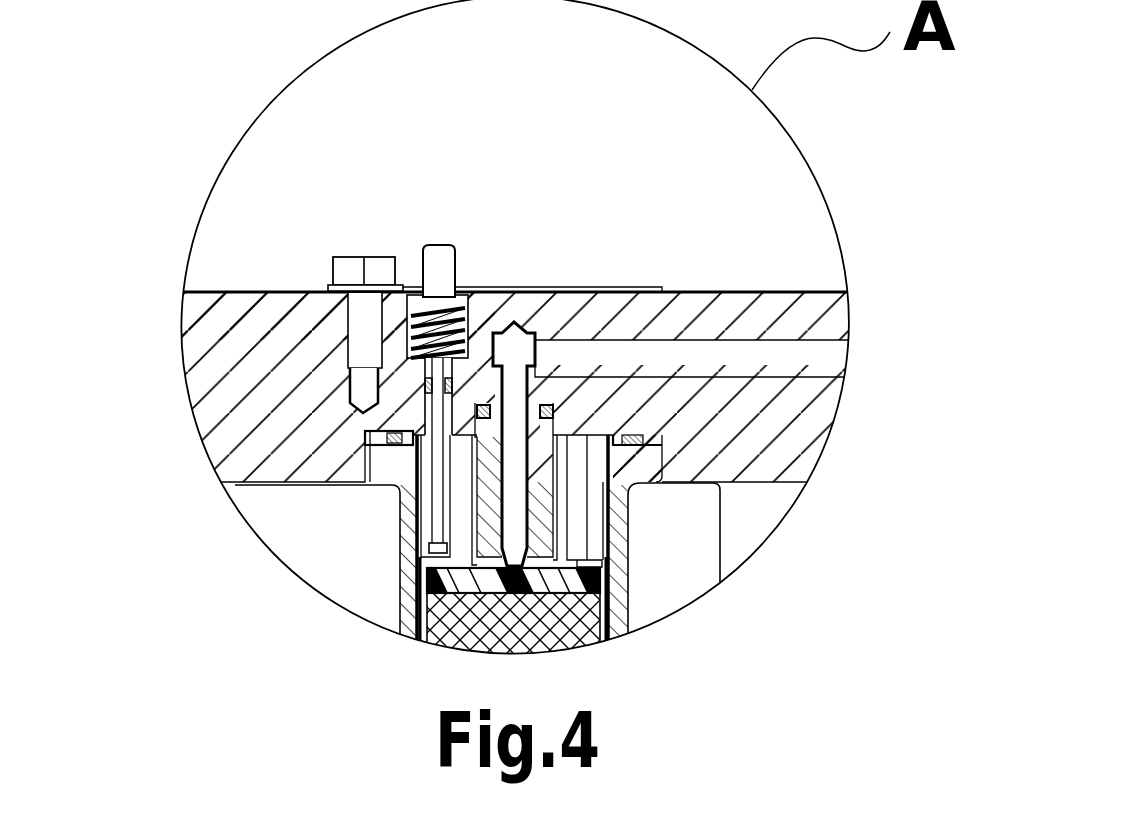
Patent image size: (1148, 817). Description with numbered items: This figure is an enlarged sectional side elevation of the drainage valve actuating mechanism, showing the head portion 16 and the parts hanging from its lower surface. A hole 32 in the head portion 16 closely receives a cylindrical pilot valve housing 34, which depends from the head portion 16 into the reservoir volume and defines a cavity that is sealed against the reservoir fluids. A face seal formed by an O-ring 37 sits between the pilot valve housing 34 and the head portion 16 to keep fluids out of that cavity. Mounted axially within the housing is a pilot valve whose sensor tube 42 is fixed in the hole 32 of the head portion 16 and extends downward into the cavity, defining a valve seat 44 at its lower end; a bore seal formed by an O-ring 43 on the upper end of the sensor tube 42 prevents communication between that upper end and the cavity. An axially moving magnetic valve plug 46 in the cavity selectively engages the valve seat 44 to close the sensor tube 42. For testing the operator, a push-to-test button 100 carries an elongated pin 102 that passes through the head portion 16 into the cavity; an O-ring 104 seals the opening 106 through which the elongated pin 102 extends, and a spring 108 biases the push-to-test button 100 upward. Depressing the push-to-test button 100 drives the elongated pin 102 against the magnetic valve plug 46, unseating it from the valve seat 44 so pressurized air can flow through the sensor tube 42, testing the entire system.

The head portion 16 is at (200, 335).
The hole 32 is at (370, 483).
The pilot valve housing 34 is at (437, 543).
The O-ring 37 is at (370, 462).
The sensor tube 42 is at (540, 507).
The O-ring 43 is at (477, 413).
The valve seat 44 is at (535, 560).
The magnetic valve plug 46 is at (573, 637).
The push-to-test button 100 is at (441, 253).
The elongated pin 102 is at (425, 548).
The O-ring 104 is at (348, 380).
The opening 106 is at (365, 430).
The spring 108 is at (413, 312).